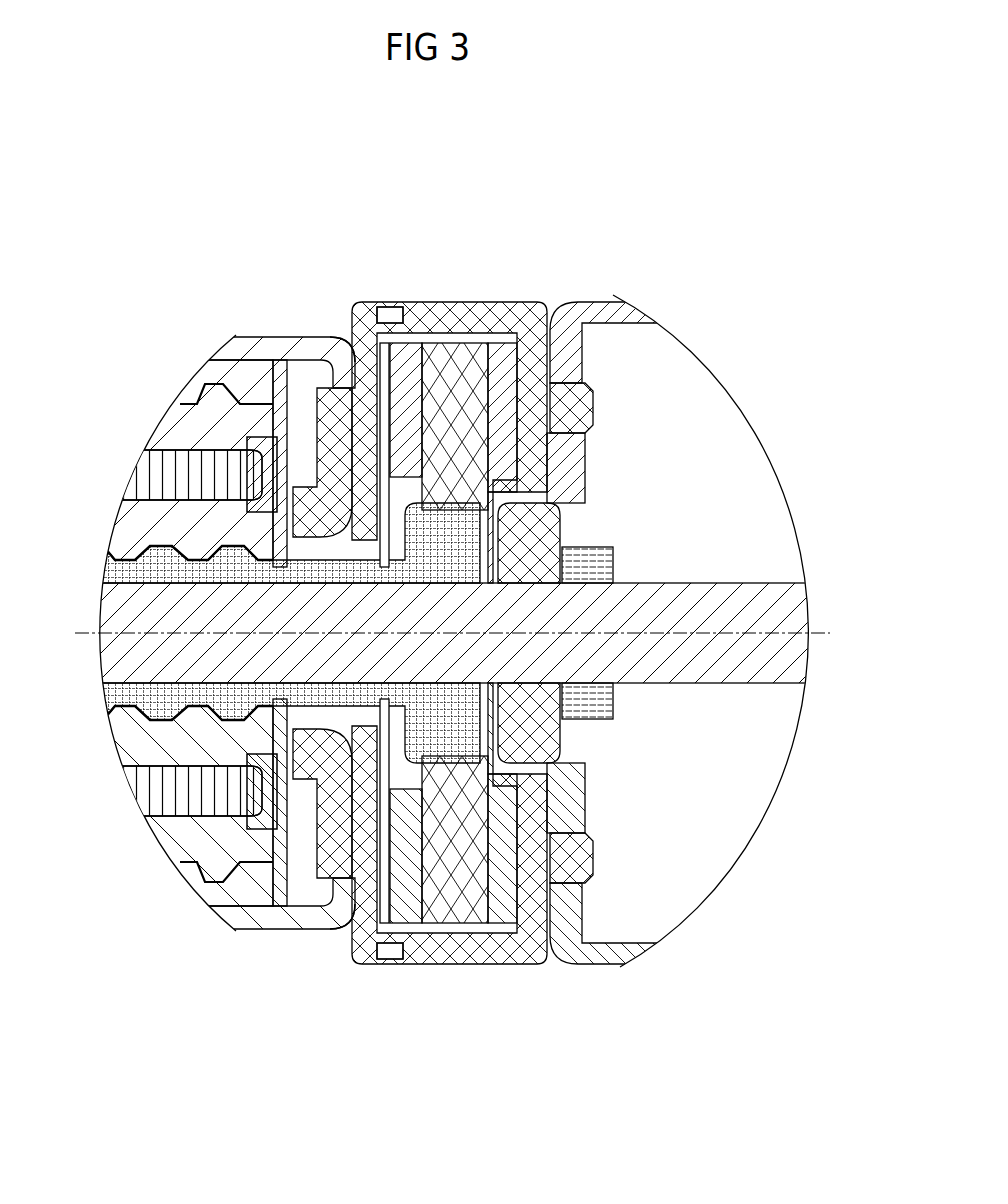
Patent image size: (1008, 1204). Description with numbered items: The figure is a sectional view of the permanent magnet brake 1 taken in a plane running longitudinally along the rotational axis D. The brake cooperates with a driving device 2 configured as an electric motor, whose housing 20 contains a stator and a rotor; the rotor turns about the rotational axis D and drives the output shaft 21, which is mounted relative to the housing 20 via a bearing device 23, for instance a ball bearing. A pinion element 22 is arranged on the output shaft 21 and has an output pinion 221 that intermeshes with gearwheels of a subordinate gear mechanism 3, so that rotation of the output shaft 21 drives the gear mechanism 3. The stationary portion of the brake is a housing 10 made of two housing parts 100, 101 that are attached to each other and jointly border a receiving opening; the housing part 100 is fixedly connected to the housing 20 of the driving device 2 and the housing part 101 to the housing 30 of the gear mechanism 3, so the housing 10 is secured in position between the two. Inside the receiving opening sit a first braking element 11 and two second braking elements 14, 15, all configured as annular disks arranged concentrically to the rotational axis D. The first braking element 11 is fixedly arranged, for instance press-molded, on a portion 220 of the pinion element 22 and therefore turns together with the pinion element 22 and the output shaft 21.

The permanent magnet brake 1 is at (450, 556).
The housing 10 is at (405, 288).
The housing part 100 is at (480, 316).
The housing part 101 is at (355, 305).
The first braking element 11 is at (513, 320).
The second braking element 14 is at (502, 382).
The second braking element 15 is at (350, 350).
The driving device 2 is at (472, 640).
The housing 20 is at (590, 952).
The output shaft 21 is at (798, 600).
The pinion element 22 is at (160, 557).
The portion of the pinion element 220 is at (425, 734).
The output pinion 221 is at (165, 706).
The bearing device 23 is at (553, 531).
The gear mechanism 3 is at (222, 676).
The housing 30 is at (257, 922).
The rotational axis D is at (88, 637).